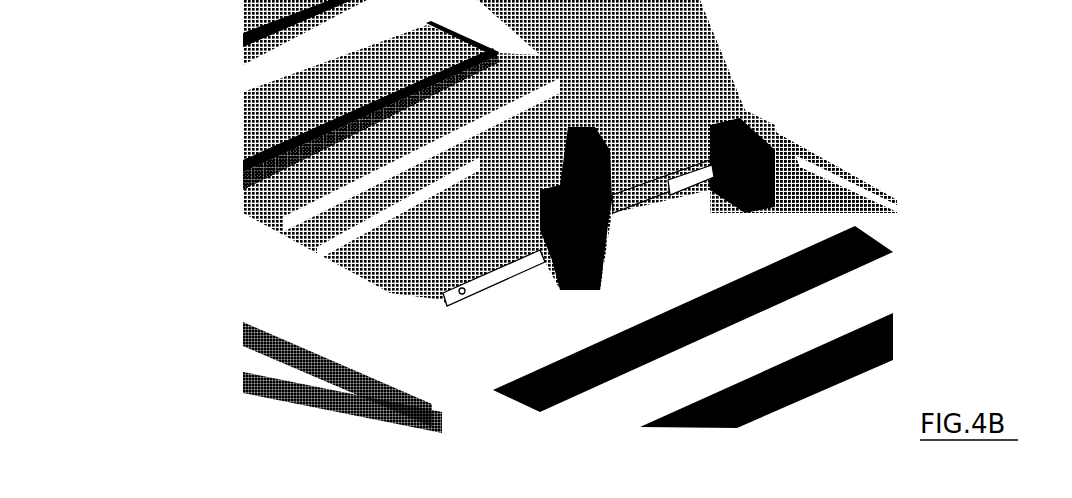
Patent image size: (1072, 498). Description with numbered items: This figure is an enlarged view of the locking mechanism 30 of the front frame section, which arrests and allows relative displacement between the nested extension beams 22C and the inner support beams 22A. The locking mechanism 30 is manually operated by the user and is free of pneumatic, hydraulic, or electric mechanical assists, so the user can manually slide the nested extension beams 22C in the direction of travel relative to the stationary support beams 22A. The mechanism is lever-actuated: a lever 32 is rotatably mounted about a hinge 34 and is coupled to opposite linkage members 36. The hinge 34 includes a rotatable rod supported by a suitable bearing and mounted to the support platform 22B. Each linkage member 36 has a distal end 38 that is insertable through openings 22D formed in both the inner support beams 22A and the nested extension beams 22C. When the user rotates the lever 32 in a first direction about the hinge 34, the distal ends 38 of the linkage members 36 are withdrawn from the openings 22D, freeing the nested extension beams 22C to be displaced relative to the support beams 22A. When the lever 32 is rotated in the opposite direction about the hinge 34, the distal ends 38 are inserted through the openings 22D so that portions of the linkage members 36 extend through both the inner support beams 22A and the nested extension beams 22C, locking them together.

The inner support beams 22A is at (745, 107).
The support platform 22B is at (265, 172).
The nested extension beams 22C is at (820, 157).
The openings 22D is at (748, 150).
The locking mechanism 30 is at (630, 297).
The lever 32 is at (600, 165).
The hinge 34 is at (596, 268).
The linkage members 36 is at (650, 190).
The distal end 38 is at (712, 188).